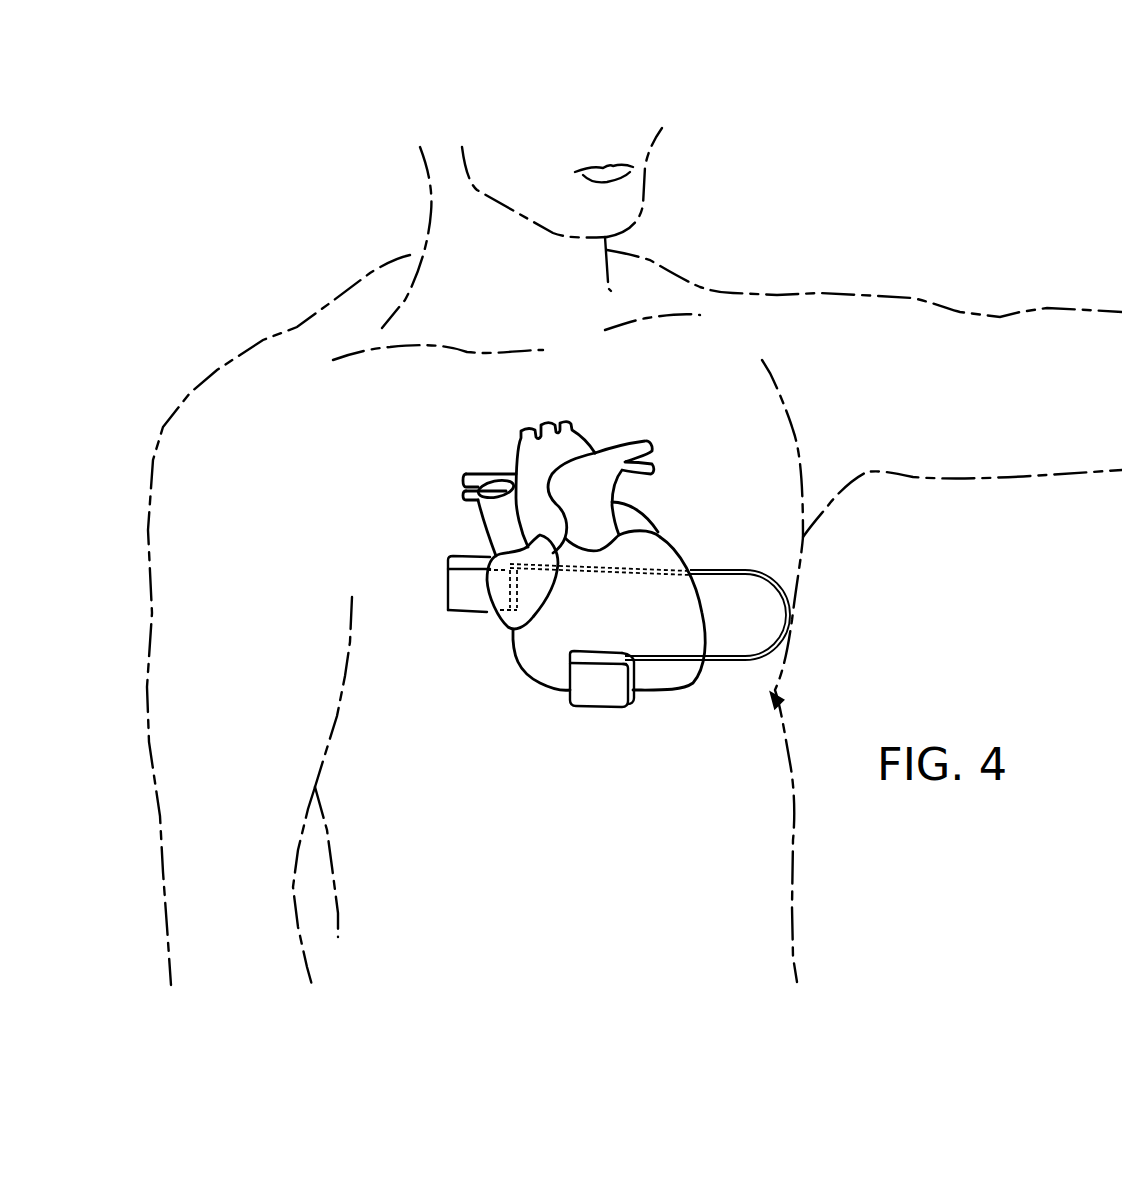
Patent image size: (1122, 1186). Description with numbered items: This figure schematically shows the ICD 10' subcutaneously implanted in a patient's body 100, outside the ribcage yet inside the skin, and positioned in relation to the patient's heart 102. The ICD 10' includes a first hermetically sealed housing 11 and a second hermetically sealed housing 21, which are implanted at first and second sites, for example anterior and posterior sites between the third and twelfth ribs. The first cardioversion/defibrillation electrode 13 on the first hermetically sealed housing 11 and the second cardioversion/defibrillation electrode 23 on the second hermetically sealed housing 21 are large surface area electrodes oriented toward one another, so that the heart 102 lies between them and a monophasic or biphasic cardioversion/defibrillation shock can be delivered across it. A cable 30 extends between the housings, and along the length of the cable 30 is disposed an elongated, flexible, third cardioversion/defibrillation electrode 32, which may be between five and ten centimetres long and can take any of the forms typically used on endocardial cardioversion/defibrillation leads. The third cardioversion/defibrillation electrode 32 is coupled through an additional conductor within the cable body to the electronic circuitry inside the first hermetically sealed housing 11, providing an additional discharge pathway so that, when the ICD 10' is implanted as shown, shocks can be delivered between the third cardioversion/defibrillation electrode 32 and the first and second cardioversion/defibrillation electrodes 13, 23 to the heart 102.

The ICD 10' is at (636, 623).
The first hermetically sealed housing 11 is at (644, 715).
The first cardioversion/defibrillation electrode 13 is at (637, 700).
The second hermetically sealed housing 21 is at (546, 606).
The second cardioversion/defibrillation electrode 23 is at (447, 590).
The cable 30 is at (747, 583).
The third cardioversion/defibrillation electrode 32 is at (787, 643).
The patient's body 100 is at (451, 809).
The heart 102 is at (584, 556).